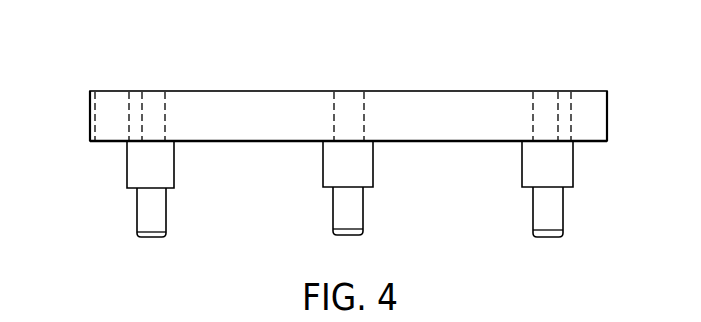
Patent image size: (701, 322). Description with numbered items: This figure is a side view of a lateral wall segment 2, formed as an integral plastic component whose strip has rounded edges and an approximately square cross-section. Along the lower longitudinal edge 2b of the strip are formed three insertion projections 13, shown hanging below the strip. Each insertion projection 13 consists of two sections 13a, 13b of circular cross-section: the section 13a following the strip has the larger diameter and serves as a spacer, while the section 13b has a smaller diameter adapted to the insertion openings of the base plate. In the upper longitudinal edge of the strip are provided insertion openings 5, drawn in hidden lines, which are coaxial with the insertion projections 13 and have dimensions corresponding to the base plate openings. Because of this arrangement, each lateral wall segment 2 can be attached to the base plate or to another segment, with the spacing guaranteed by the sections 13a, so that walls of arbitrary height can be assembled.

The lateral wall segment 2 is at (427, 86).
The lower longitudinal edge 2b is at (286, 142).
The insertion openings 5 is at (348, 113).
The insertion projections 13 is at (510, 165).
The section 13a is at (157, 168).
The section 13b is at (153, 202).